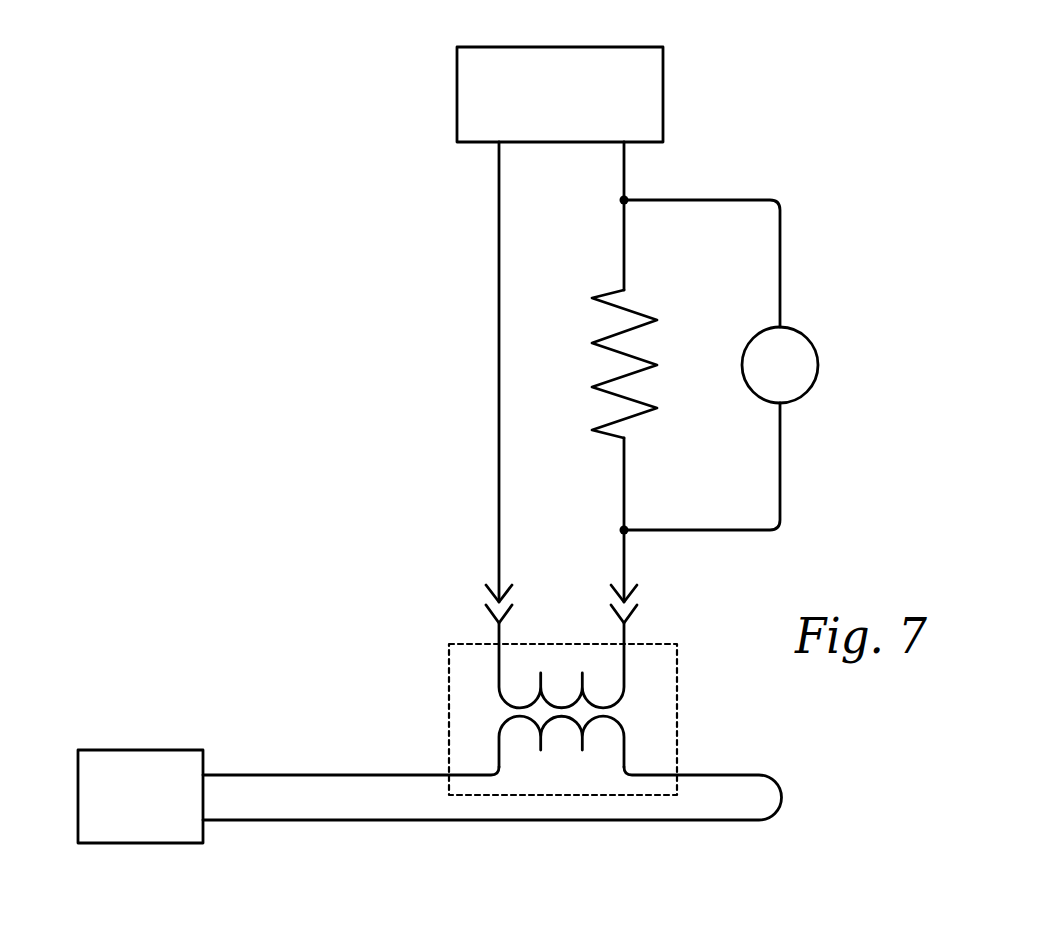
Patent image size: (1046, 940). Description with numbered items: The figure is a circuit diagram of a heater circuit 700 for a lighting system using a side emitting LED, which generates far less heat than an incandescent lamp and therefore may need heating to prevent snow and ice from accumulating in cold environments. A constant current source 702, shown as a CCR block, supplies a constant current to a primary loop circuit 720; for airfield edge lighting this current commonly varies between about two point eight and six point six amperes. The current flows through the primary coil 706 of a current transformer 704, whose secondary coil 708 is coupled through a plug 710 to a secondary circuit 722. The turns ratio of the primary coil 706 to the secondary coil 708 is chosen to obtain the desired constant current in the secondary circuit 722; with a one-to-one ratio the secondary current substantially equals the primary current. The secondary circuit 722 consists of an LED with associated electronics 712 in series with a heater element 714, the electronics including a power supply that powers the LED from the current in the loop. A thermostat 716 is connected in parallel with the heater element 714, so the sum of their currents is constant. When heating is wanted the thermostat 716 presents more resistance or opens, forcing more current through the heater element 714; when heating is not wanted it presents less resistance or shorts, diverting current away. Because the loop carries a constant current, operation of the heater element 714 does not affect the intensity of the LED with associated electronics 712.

The heater circuit 700 is at (262, 246).
The constant current source 702 is at (157, 750).
The current transformer 704 is at (677, 697).
The primary coil 706 is at (499, 738).
The secondary coil 708 is at (499, 696).
The plug 710 is at (482, 593).
The LED with associated electronics 712 is at (663, 100).
The heater element 714 is at (658, 350).
The thermostat 716 is at (818, 352).
The circuit 720 is at (285, 748).
The secondary circuit 722 is at (775, 160).